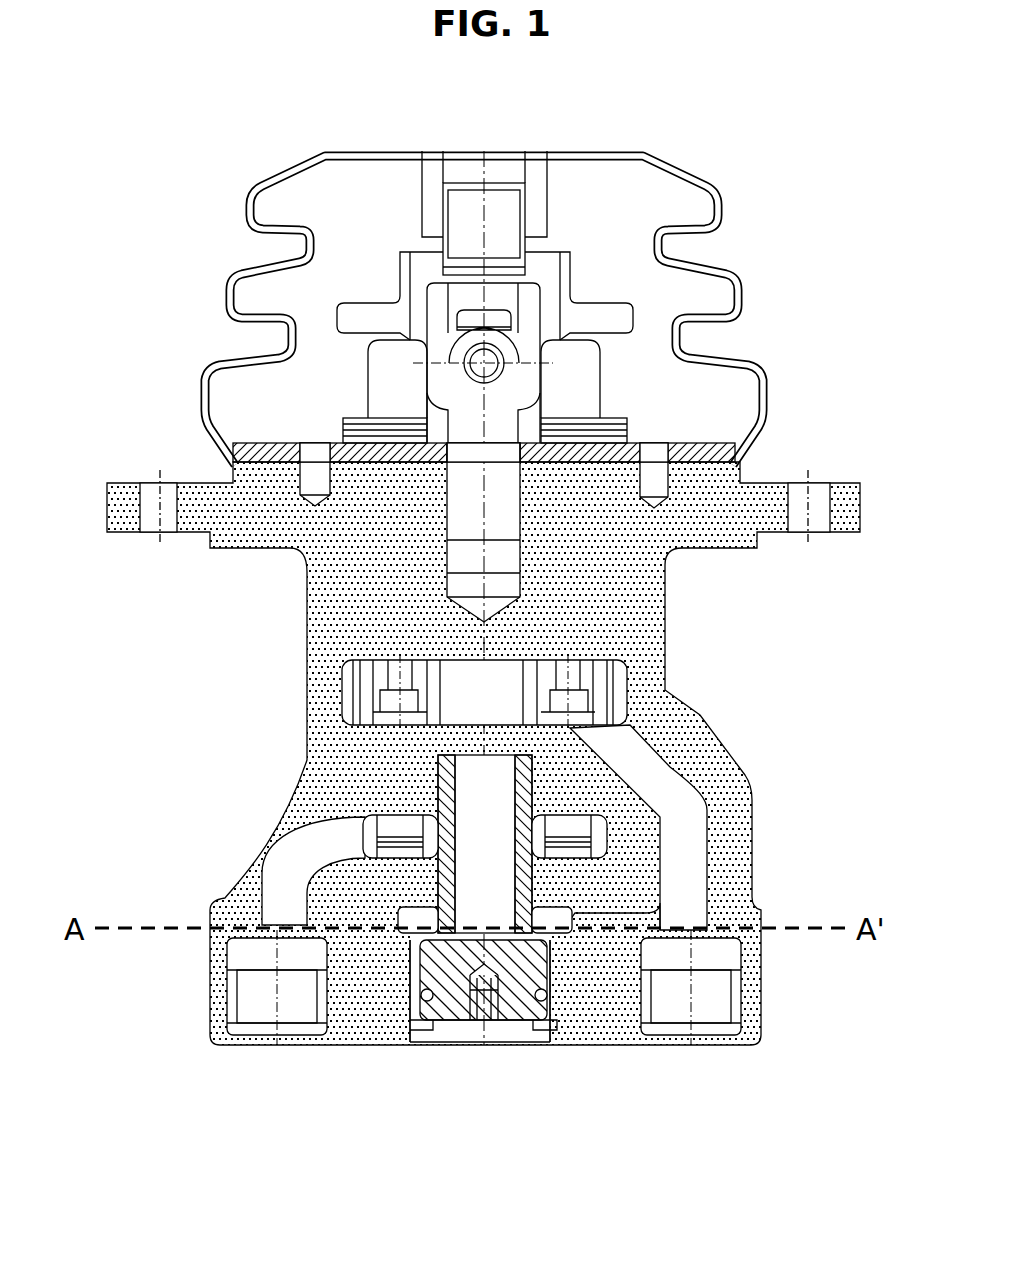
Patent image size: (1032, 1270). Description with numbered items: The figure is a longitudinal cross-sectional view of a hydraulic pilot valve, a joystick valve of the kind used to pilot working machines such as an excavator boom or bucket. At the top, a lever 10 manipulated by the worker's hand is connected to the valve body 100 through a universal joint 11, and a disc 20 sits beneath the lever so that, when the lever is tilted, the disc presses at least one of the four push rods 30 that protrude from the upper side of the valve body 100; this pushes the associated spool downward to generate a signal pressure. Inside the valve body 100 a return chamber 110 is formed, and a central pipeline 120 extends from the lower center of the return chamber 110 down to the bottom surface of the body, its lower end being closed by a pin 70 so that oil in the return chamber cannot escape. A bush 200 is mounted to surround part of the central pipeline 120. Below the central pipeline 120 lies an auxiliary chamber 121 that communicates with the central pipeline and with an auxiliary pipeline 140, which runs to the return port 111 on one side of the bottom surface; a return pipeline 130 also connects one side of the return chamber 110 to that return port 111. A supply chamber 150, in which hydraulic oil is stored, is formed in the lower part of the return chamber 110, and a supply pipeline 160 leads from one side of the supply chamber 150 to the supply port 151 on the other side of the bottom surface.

The lever 10 is at (550, 172).
The disc 20 is at (602, 302).
The universal joint 11 is at (442, 337).
The push rod 30 is at (600, 378).
The valve body 100 is at (283, 615).
The return chamber 110 is at (340, 687).
The bush 200 is at (533, 780).
The return pipeline 130 is at (670, 768).
The central pipeline 120 is at (432, 734).
The supply pipeline 160 is at (258, 895).
The supply chamber 150 is at (607, 833).
The auxiliary pipeline 140 is at (612, 985).
The pin 70 is at (455, 1025).
The auxiliary chamber 121 is at (420, 940).
The supply port 151 is at (262, 1047).
The return port 111 is at (703, 1047).